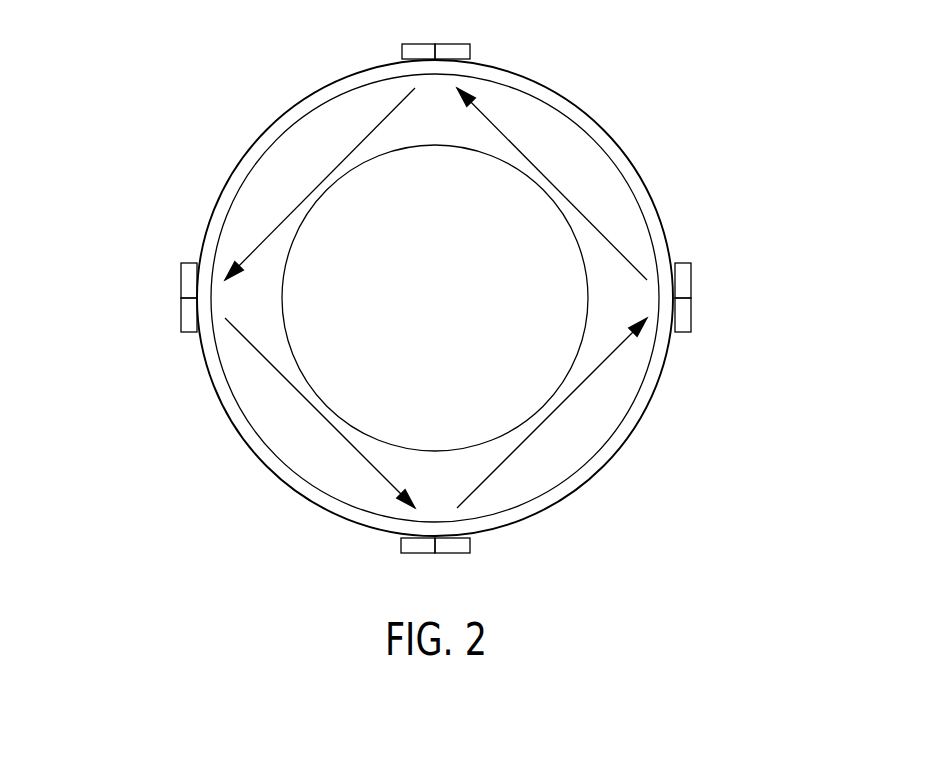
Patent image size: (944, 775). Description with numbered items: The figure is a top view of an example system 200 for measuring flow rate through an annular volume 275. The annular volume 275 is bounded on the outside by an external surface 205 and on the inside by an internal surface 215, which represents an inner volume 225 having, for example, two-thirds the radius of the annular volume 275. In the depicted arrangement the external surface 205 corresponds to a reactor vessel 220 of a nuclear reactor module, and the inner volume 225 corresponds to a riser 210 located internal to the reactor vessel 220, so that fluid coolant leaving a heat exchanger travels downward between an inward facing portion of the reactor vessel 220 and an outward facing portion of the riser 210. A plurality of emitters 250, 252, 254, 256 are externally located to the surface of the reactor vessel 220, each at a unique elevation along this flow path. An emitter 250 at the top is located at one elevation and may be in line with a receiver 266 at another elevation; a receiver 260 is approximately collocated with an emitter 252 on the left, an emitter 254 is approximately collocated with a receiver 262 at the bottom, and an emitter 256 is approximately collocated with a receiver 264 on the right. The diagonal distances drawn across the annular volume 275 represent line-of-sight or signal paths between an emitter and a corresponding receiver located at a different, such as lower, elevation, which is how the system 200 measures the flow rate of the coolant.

The system 200 is at (444, 311).
The external surface 205 is at (565, 497).
The riser 210 is at (572, 298).
The internal surface 215 is at (582, 350).
The reactor vessel 220 is at (643, 172).
The inner volume 225 is at (452, 308).
The emitter 250 is at (420, 44).
The emitter 252 is at (181, 325).
The emitter 254 is at (457, 552).
The emitter 256 is at (689, 272).
The receiver 260 is at (181, 272).
The receiver 262 is at (415, 552).
The receiver 264 is at (689, 325).
The receiver 266 is at (455, 44).
The annular volume 275 is at (613, 408).